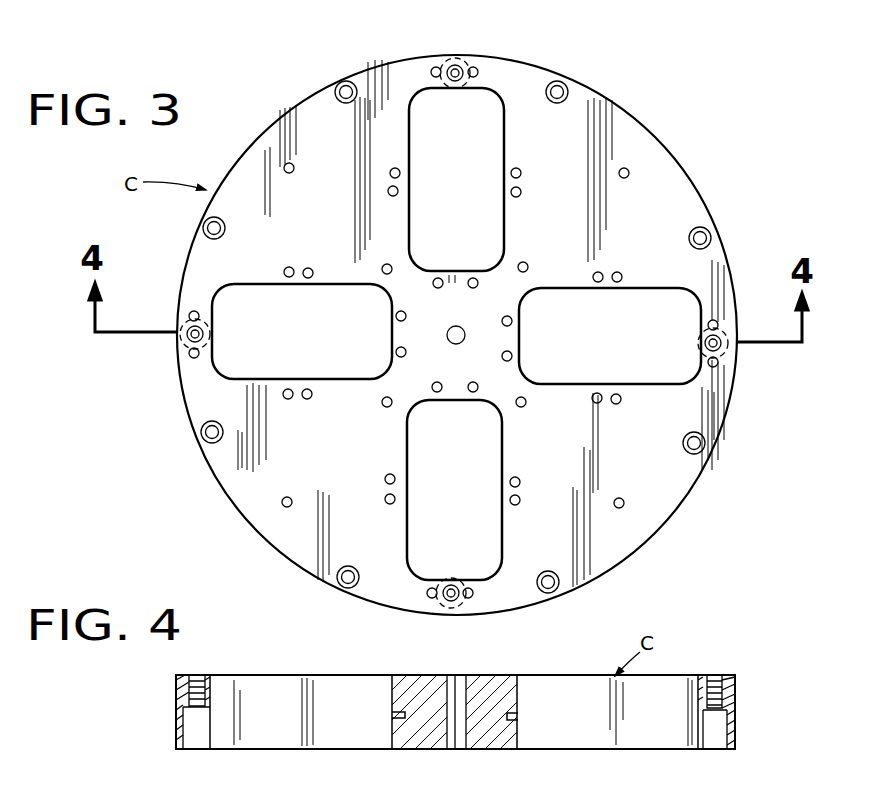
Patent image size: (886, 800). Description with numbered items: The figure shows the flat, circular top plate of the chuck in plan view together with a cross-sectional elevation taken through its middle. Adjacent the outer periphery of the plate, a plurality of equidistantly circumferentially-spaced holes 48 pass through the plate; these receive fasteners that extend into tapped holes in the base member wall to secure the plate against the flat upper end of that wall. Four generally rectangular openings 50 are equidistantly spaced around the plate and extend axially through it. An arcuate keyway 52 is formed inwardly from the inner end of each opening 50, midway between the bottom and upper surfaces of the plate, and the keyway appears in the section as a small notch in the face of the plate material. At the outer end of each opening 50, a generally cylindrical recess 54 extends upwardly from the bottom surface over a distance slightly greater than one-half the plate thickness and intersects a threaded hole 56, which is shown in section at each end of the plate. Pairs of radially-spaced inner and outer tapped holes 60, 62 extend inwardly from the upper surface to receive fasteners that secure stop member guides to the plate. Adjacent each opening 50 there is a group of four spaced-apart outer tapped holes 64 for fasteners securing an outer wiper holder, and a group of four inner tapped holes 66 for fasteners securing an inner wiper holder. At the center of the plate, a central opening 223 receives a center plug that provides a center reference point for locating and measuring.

In FIG. 3, the holes 48 is at (345, 81).
In FIG. 3, the rectangular openings 50 is at (499, 131).
In FIG. 4, the rectangular openings 50 is at (392, 735).
In FIG. 3, the arcuate keyway 52 is at (453, 282).
In FIG. 4, the arcuate keyway 52 is at (392, 715).
In FIG. 3, the cylindrical recesses 54 is at (463, 59).
In FIG. 4, the cylindrical recesses 54 is at (184, 735).
In FIG. 3, the threaded holes 56 is at (452, 66).
In FIG. 4, the threaded holes 56 is at (197, 675).
In FIG. 3, the inner tapped holes 60 is at (386, 264).
In FIG. 3, the outer tapped holes 62 is at (292, 165).
In FIG. 3, the outer tapped holes 64 is at (288, 267).
In FIG. 3, the inner tapped holes 66 is at (310, 269).
In FIG. 3, the central opening 223 is at (459, 343).
In FIG. 4, the central opening 223 is at (449, 735).